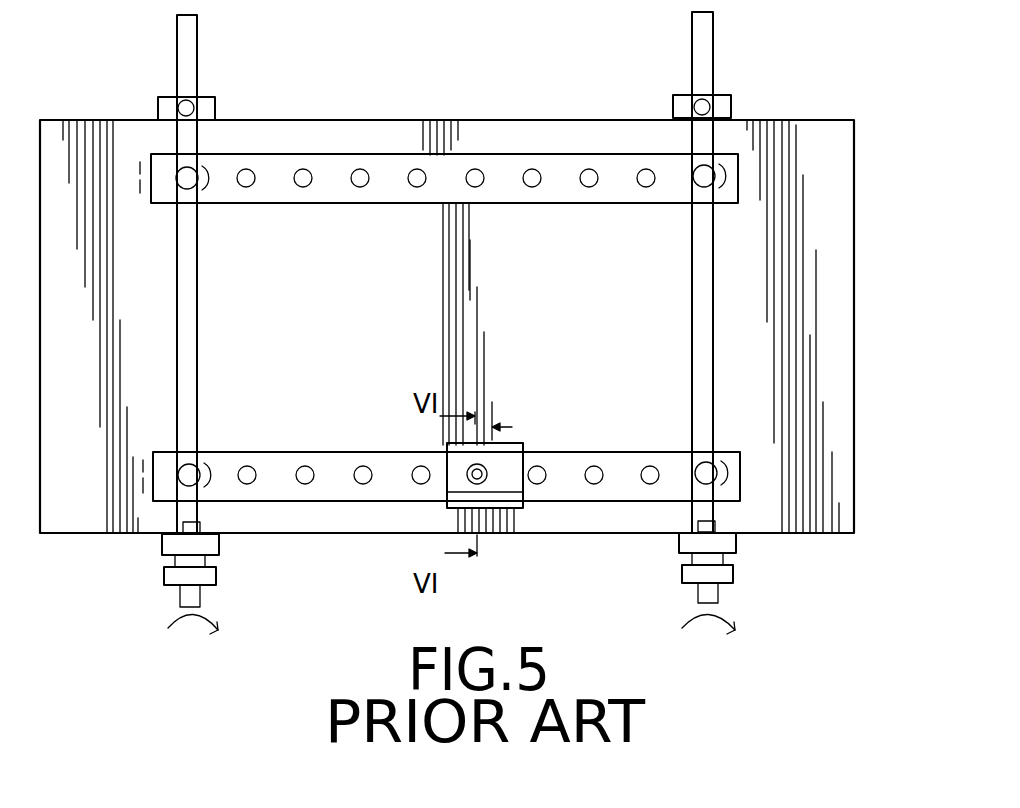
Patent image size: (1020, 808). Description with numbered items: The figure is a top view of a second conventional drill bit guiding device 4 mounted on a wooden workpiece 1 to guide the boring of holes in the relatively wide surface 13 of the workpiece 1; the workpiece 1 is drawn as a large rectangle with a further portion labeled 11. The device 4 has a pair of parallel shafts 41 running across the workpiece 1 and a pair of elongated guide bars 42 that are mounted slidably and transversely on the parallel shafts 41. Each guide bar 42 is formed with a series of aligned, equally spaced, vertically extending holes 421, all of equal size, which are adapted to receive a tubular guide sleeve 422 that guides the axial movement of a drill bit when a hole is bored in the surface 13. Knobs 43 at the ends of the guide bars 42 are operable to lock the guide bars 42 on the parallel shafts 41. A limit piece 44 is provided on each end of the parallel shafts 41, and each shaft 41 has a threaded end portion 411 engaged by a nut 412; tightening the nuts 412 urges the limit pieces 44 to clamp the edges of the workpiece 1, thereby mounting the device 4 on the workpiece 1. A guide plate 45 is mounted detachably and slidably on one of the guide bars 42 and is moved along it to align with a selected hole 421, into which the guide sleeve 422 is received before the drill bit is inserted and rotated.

The wooden workpiece 1 is at (456, 327).
The drill bit guiding device 4 is at (455, 334).
The base plate 11 is at (823, 125).
The wide surface 13 is at (844, 490).
The parallel shafts 41 is at (192, 341).
The elongated guide bars 42 is at (335, 163).
The holes 421 is at (417, 187).
The tubular guide sleeve 422 is at (480, 478).
The knobs 43 is at (185, 181).
The limit piece 44 is at (208, 102).
The guide plate 45 is at (514, 501).
The threaded end portion 411 is at (200, 602).
The nuts 412 is at (213, 578).